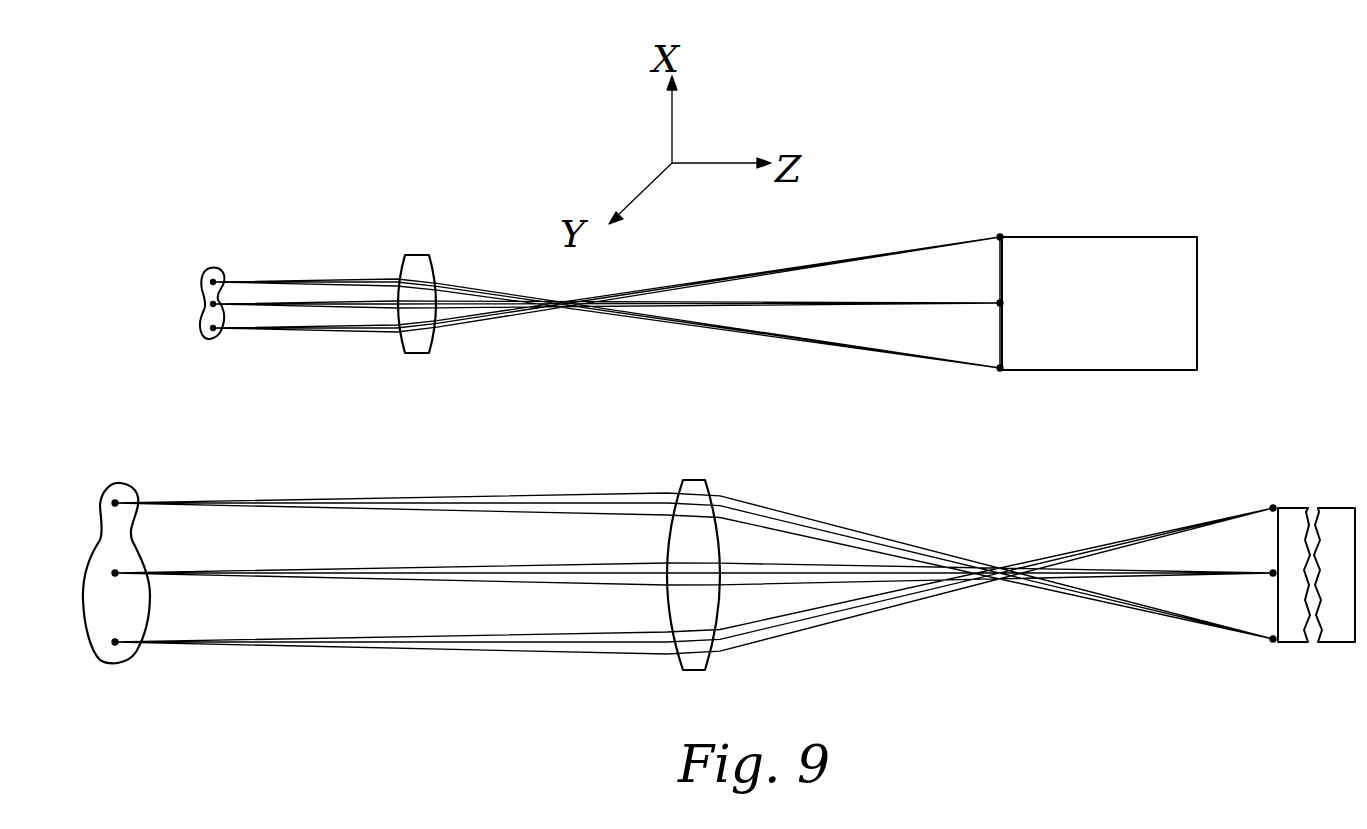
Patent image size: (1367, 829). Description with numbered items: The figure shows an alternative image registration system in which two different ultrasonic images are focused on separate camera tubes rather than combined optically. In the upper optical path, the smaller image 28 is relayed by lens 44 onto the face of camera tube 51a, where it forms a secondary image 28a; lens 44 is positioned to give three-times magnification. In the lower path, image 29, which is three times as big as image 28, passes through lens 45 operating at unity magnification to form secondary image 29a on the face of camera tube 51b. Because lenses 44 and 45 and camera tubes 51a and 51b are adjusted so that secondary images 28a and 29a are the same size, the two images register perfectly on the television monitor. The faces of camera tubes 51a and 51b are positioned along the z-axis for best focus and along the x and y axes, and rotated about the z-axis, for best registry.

The image 28 is at (226, 275).
The lens 44 is at (434, 263).
The secondary image 28a is at (996, 372).
The camera tube 51a is at (1090, 363).
The image 29 is at (135, 490).
The lens 45 is at (713, 484).
The secondary image 29a is at (1272, 644).
The camera tube 51b is at (1290, 510).